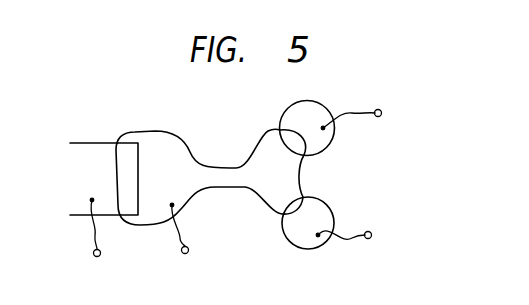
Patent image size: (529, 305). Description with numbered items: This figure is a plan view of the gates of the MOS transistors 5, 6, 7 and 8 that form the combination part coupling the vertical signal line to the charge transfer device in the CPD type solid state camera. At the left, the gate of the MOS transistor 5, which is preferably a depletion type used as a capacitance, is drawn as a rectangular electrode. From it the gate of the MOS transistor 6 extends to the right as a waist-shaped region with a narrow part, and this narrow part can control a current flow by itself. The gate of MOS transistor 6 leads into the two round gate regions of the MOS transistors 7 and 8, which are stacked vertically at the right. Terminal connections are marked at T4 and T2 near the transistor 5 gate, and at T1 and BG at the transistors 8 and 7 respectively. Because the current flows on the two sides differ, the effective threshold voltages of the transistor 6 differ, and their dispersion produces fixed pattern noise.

The MOS transistor 5 is at (83, 143).
The MOS transistor 6 is at (243, 187).
The MOS transistor 7 is at (308, 249).
The MOS transistor 8 is at (333, 146).
The terminal T1 is at (364, 115).
The terminal T2 is at (183, 245).
The terminal T4 is at (94, 243).
The terminal BG is at (360, 239).